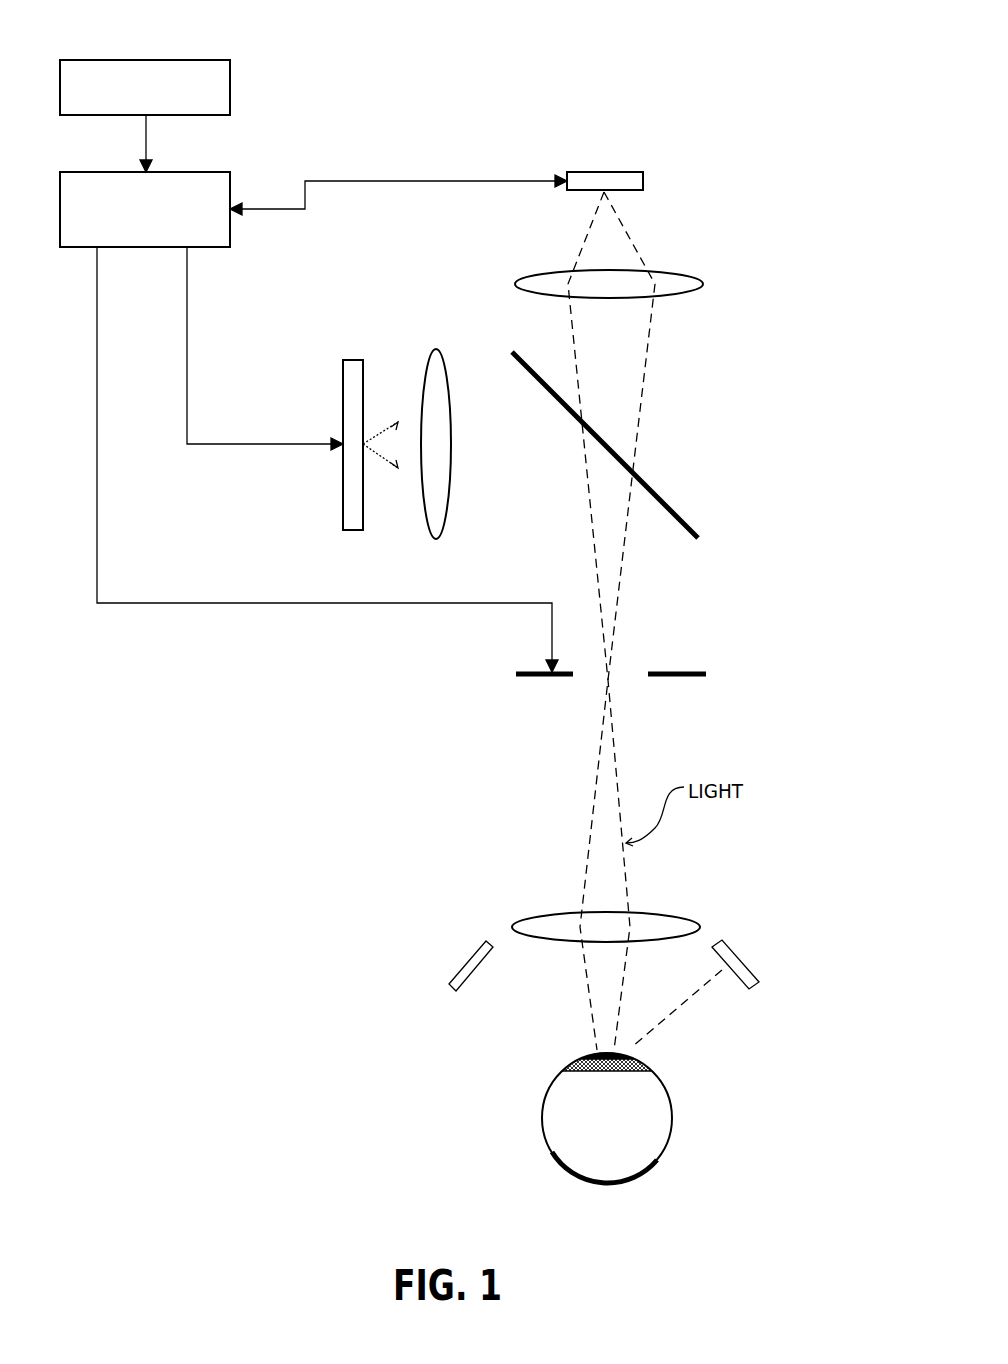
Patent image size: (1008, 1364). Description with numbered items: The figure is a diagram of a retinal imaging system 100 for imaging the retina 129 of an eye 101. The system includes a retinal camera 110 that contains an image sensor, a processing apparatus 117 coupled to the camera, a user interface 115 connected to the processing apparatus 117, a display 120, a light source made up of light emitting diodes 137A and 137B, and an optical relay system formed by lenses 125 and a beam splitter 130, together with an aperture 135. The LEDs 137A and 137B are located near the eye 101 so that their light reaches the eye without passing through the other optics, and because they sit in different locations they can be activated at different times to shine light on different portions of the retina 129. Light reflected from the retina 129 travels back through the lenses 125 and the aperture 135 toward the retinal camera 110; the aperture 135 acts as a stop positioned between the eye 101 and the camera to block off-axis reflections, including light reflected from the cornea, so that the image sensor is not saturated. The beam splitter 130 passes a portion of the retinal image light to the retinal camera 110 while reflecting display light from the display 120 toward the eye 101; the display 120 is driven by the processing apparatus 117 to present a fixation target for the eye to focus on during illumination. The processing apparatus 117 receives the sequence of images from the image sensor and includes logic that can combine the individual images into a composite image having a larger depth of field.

The retinal imaging system 100 is at (477, 28).
The user interface 115 is at (205, 100).
The processing apparatus 117 is at (184, 221).
The retinal camera 110 is at (644, 181).
The lenses 125 is at (703, 284).
The display 120 is at (345, 407).
The beam splitter 130 is at (698, 535).
The aperture 135 is at (666, 680).
The light emitting diode 137A is at (758, 985).
The light emitting diode 137B is at (448, 986).
The eye 101 is at (620, 1131).
The retina 129 is at (620, 1186).